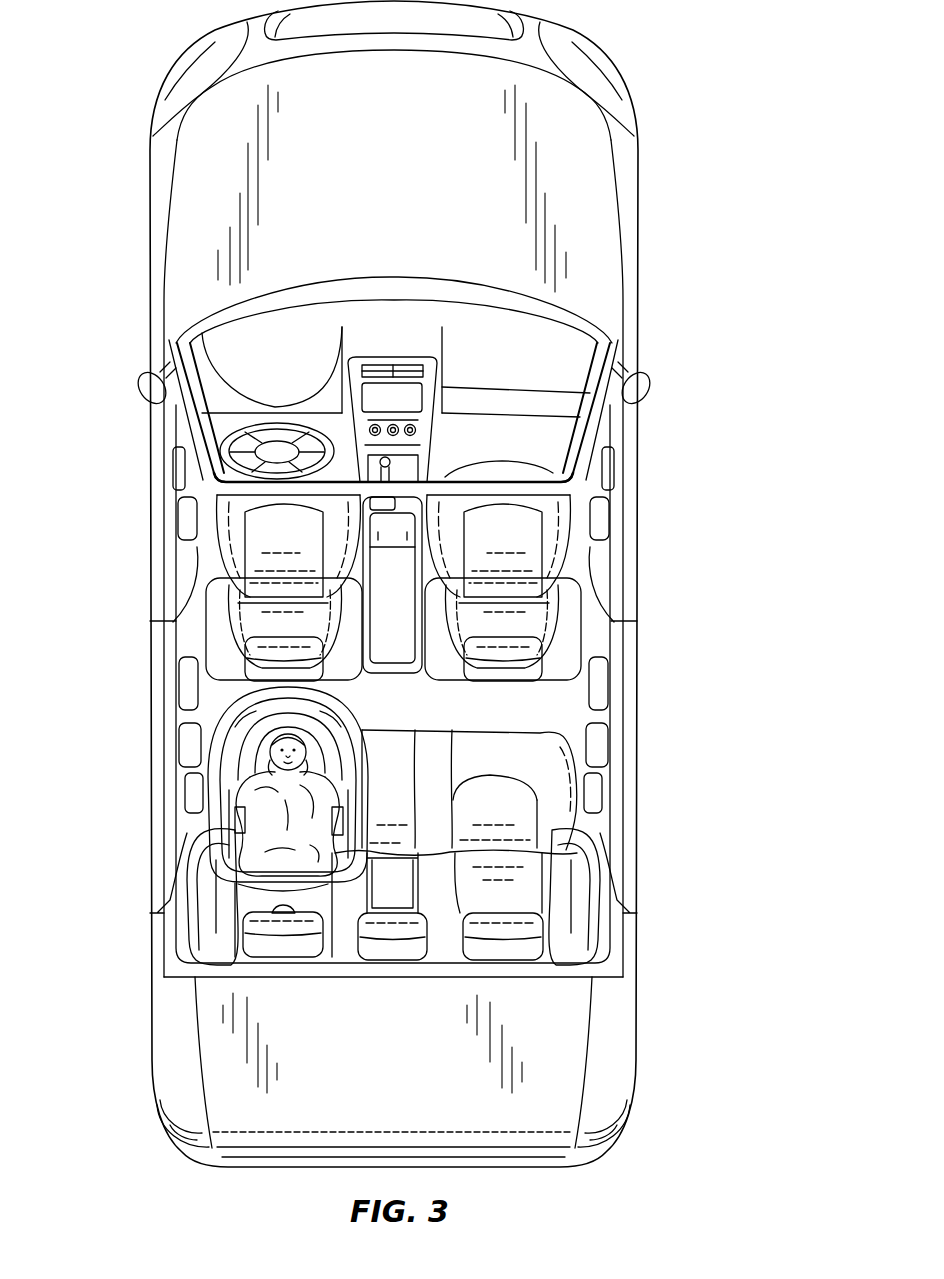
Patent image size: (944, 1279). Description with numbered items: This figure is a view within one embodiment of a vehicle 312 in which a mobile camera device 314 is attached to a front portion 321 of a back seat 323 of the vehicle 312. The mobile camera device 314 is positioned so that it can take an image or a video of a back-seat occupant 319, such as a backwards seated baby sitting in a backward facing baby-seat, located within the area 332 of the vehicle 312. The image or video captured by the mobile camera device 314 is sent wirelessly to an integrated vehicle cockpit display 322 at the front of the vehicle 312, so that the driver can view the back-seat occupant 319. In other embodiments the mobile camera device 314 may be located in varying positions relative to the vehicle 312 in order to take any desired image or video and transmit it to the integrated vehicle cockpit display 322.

The vehicle 312 is at (684, 194).
The mobile camera device 314 is at (275, 908).
The back-seat occupant 319 is at (247, 797).
The front portion 321 is at (243, 905).
The integrated vehicle cockpit display 322 is at (383, 397).
The back seat 323 is at (340, 937).
The area within the vehicle 332 is at (479, 713).